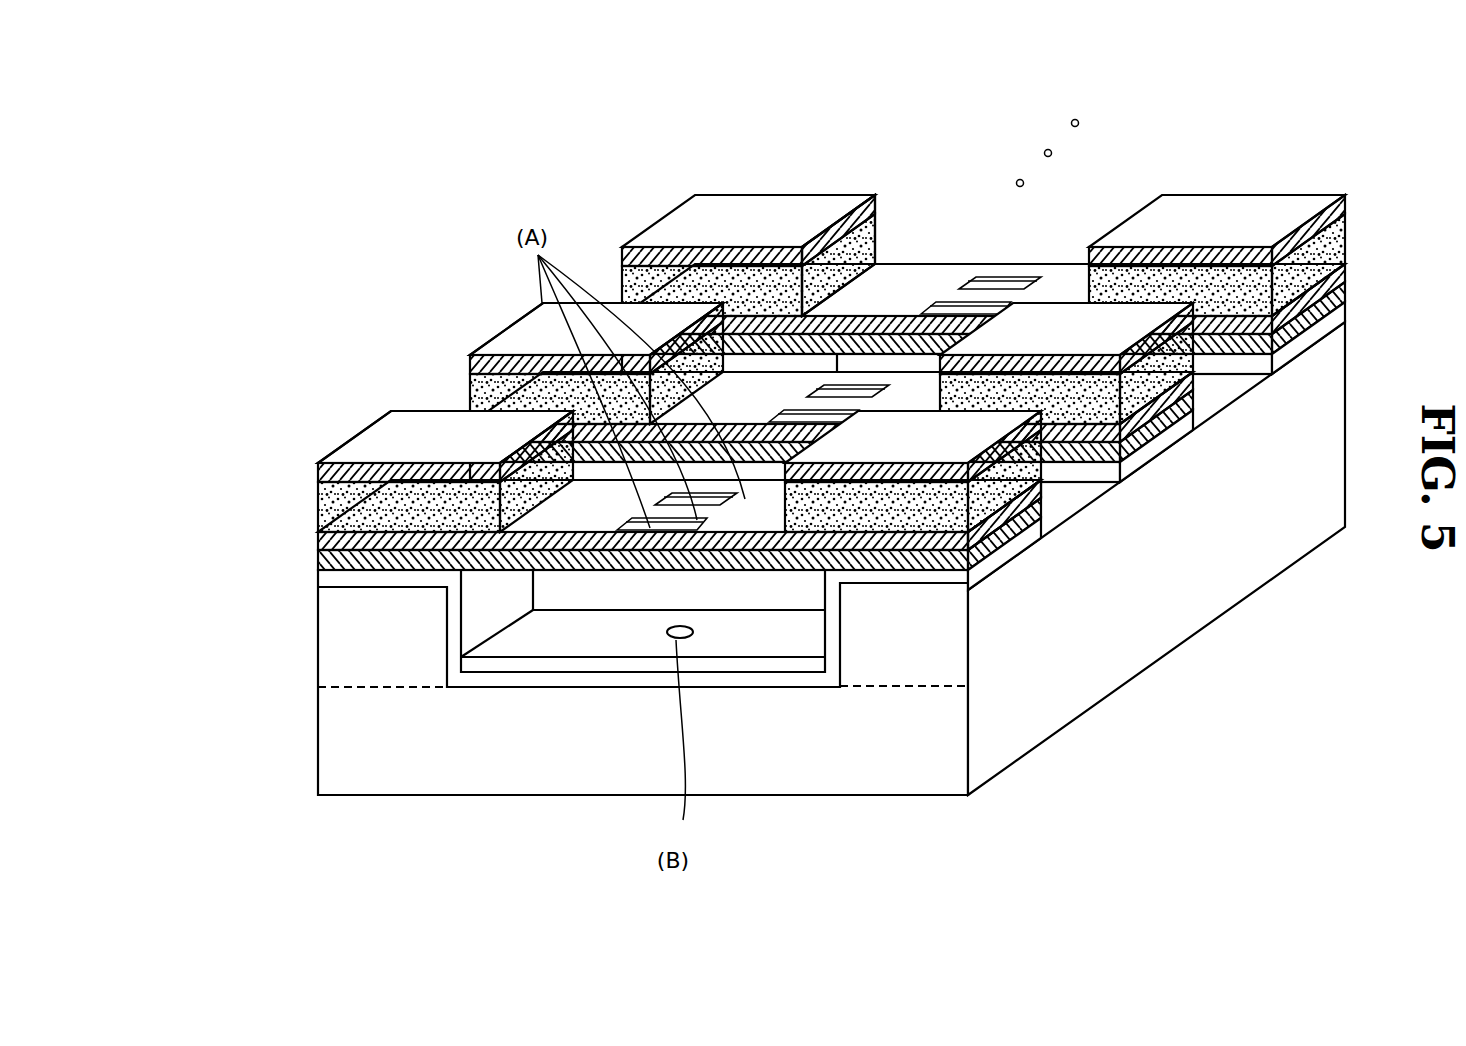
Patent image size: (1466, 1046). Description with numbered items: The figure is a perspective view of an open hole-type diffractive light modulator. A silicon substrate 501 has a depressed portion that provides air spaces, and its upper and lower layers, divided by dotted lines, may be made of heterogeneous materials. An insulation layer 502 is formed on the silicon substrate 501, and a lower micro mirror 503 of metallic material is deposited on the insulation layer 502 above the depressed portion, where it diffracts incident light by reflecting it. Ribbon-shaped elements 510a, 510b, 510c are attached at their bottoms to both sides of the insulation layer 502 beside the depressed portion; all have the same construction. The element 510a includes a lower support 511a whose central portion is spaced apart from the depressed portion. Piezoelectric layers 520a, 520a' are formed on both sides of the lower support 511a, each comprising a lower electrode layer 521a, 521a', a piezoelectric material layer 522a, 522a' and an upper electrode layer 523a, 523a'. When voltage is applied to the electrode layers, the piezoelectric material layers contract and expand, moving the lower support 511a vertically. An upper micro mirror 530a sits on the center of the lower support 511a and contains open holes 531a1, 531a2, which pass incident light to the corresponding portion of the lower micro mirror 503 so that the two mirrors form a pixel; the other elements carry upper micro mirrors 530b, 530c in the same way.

The silicon substrate 501 is at (898, 782).
The insulation layer 502 is at (803, 677).
The lower micro mirror 503 is at (515, 663).
The element 510a is at (588, 436).
The element 510b is at (505, 328).
The element 510c is at (647, 232).
The lower support 511a is at (318, 567).
The piezoelectric layer 520a is at (610, 415).
The lower electrode layer 521a is at (624, 459).
The piezoelectric material layer 522a is at (403, 429).
The upper electrode layer 523a is at (421, 389).
The piezoelectric layer 520a' is at (1056, 600).
The lower electrode layer 521a' is at (1084, 626).
The piezoelectric material layer 522a' is at (1019, 570).
The upper electrode layer 523a' is at (1039, 550).
The upper micro mirror 530a is at (462, 414).
The upper micro mirror 530b is at (622, 300).
The upper micro mirror 530c is at (863, 297).
The open hole 531a1 is at (640, 530).
The open hole 531a2 is at (745, 499).